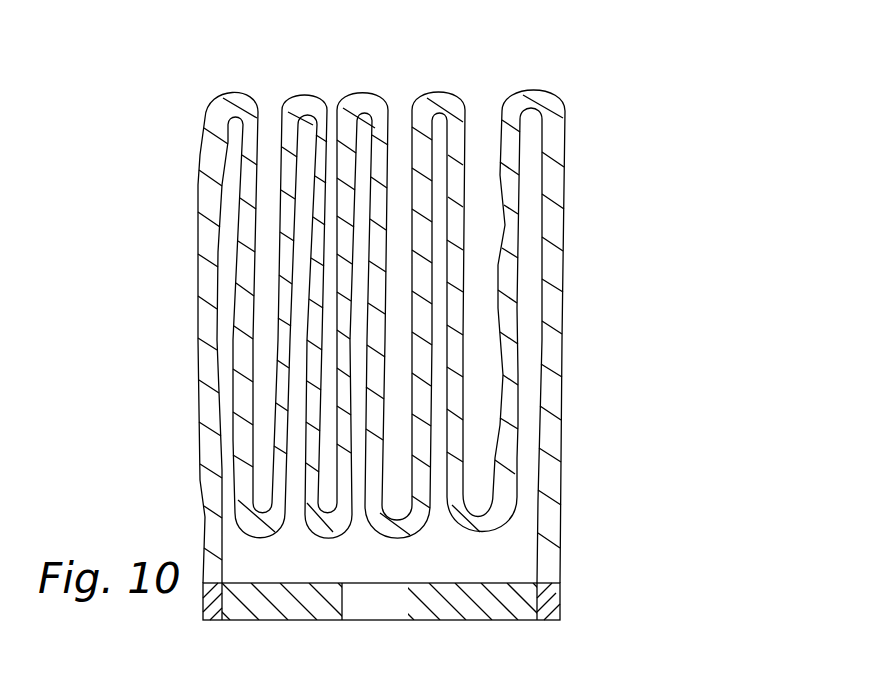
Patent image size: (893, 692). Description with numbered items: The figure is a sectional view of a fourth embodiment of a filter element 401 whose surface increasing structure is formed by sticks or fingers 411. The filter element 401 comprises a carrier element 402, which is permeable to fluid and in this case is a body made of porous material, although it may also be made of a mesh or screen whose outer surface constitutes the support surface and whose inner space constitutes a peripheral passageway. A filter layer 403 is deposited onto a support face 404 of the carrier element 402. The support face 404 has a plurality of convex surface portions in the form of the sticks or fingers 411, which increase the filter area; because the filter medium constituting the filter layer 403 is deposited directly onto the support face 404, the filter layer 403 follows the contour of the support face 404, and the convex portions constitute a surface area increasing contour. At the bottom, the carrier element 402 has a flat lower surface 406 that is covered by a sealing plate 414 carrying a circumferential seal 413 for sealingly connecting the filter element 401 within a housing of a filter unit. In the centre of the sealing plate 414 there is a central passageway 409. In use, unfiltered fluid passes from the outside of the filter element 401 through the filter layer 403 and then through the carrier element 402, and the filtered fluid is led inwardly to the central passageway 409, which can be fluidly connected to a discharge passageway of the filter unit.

The filter element 401 is at (598, 192).
The carrier element 402 is at (513, 536).
The filter layer 403 is at (552, 313).
The support face 404 is at (550, 402).
The flat lower surface 406 is at (262, 597).
The central passageway 409 is at (342, 597).
The sticks or fingers 411 is at (542, 90).
The circumferential seal 413 is at (560, 600).
The sealing plate 414 is at (480, 610).